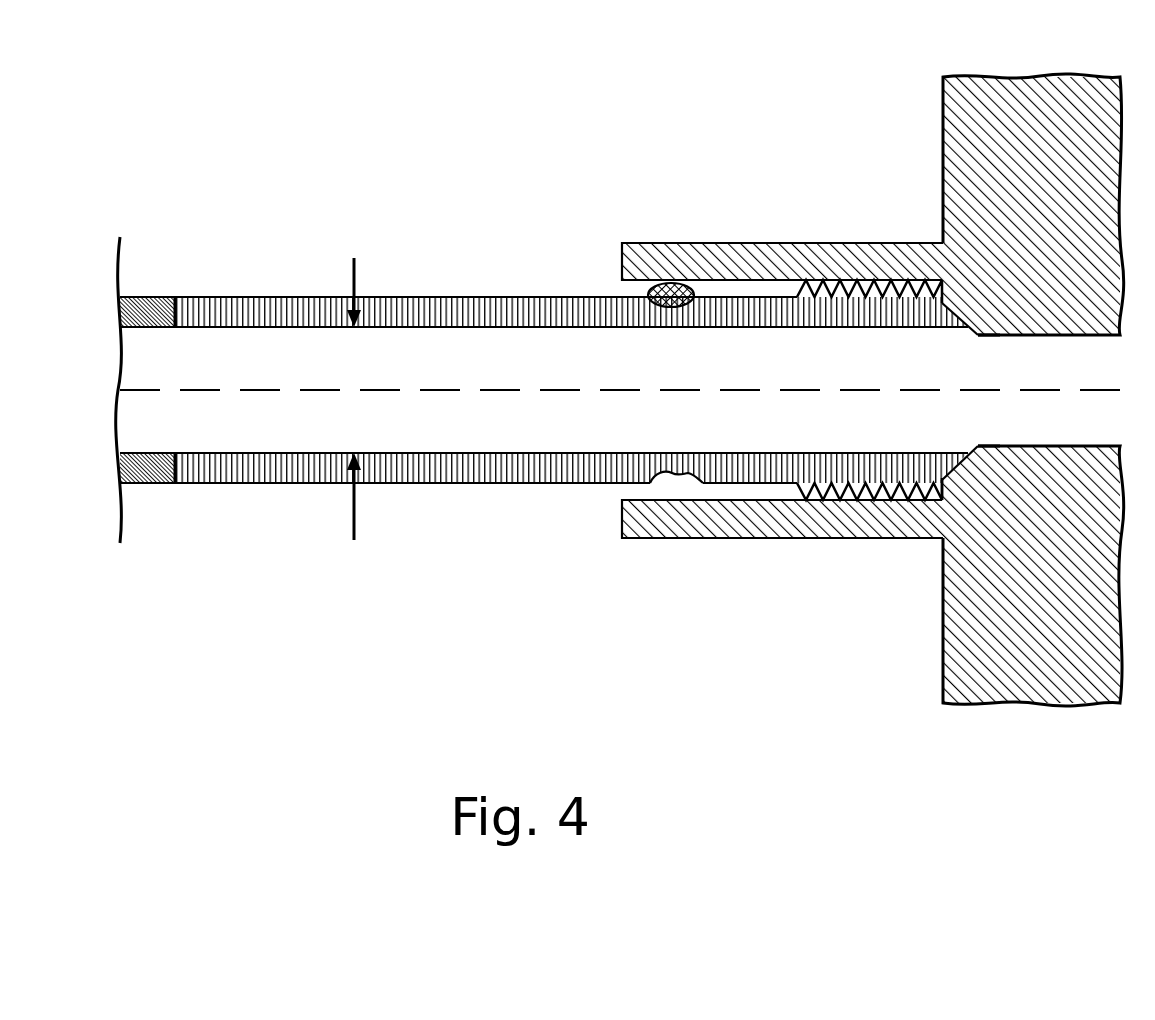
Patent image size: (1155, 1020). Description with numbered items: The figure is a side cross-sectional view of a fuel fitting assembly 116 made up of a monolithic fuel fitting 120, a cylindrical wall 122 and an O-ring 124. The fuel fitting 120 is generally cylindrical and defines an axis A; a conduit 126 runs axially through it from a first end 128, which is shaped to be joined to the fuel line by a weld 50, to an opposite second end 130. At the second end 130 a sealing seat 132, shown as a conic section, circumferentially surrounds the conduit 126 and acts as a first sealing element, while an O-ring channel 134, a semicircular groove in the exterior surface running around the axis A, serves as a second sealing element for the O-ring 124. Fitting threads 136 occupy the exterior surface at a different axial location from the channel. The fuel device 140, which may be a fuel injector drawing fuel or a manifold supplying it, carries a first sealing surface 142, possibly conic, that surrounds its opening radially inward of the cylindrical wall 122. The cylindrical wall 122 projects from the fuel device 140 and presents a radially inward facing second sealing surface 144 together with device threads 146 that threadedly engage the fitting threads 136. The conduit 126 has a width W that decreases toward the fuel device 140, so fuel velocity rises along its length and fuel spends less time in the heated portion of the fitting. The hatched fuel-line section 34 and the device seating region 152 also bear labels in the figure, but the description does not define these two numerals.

The fuel fitting assembly 116 is at (648, 97).
The fuel fitting 120 is at (268, 292).
The cylindrical wall 122 is at (900, 237).
The O-ring 124 is at (650, 287).
The conduit 126 is at (450, 452).
The first end 128 is at (222, 484).
The second end 130 is at (965, 335).
The sealing seat 132 is at (972, 455).
The O-ring channel 134 is at (660, 474).
The fitting threads 136 is at (942, 482).
The fuel device 140 is at (934, 157).
The first sealing surface 142 is at (944, 478).
The second sealing surface 144 is at (653, 500).
The device threads 146 is at (793, 290).
The conical seat 152 is at (1083, 446).
The weld 50 is at (173, 297).
The pipe section 34 is at (137, 484).
The axis A is at (210, 390).
The width W is at (354, 383).